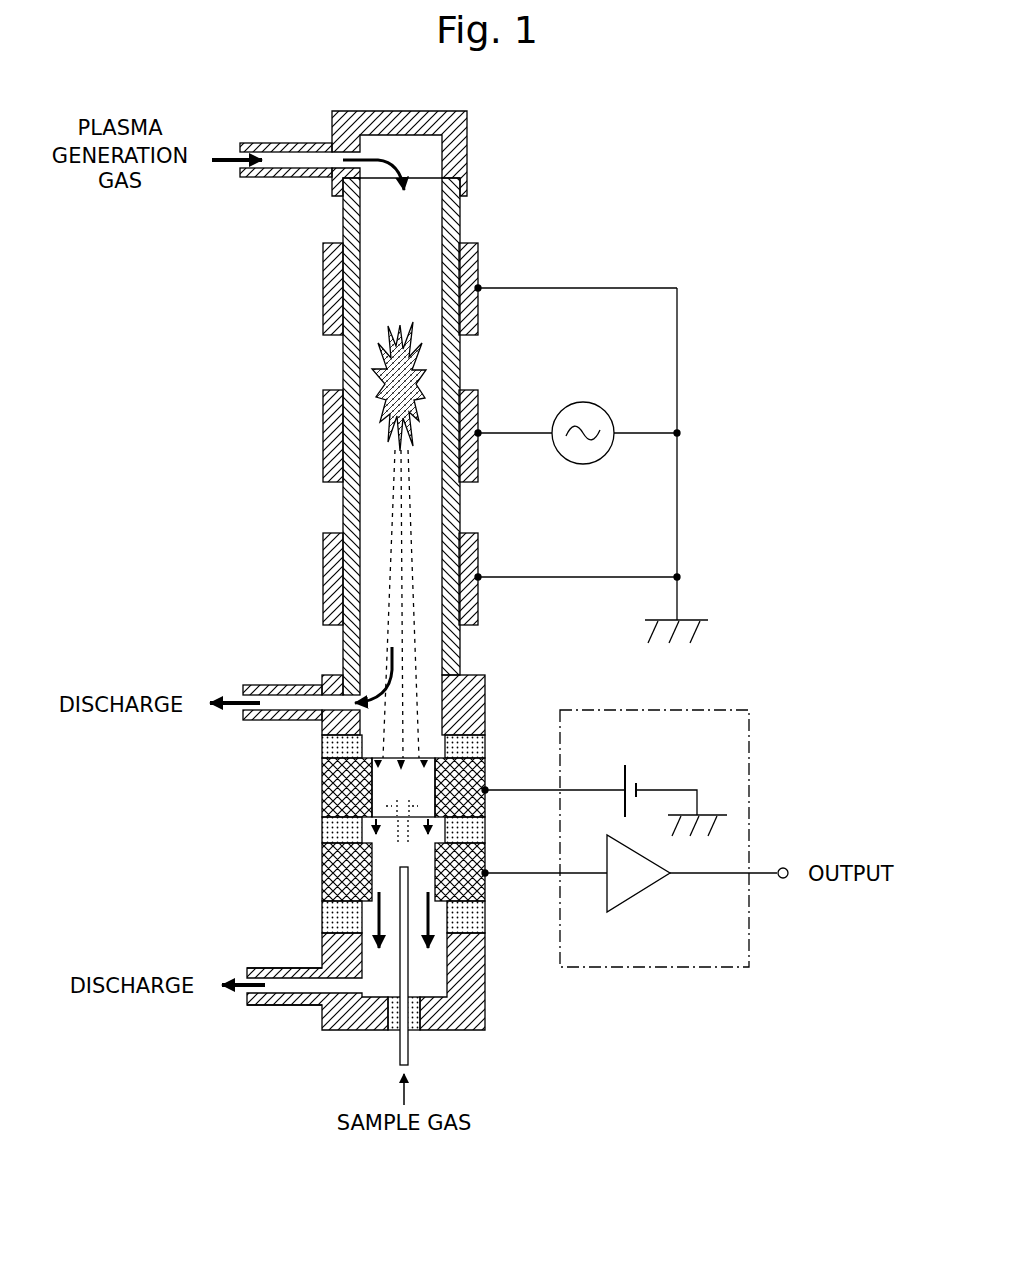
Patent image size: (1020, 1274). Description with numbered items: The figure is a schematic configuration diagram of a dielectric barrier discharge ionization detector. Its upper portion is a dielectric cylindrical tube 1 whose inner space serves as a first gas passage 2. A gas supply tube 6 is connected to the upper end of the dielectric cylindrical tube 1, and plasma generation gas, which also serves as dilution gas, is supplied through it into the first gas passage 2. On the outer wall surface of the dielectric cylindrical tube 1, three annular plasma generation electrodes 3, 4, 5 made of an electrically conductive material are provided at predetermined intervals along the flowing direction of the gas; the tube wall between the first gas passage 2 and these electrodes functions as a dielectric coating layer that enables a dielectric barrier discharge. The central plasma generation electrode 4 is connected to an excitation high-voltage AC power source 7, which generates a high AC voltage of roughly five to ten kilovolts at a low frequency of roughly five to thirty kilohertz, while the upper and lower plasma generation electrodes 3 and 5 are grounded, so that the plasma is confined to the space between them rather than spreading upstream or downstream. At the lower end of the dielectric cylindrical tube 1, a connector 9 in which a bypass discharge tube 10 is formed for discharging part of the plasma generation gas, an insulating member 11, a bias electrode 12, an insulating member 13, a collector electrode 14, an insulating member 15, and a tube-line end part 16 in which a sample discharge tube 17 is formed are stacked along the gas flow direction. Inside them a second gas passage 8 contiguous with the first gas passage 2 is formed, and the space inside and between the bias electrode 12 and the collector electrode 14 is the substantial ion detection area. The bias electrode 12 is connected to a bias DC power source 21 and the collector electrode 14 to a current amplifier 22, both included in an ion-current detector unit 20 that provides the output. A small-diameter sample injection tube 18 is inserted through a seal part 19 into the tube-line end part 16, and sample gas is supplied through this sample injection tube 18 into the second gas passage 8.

The dielectric cylindrical tube 1 is at (460, 230).
The first gas passage 2 is at (383, 525).
The plasma generation electrode 3 is at (322, 273).
The plasma generation electrode 4 is at (322, 420).
The plasma generation electrode 5 is at (322, 566).
The gas supply tube 6 is at (269, 143).
The excitation high-voltage AC power source 7 is at (604, 404).
The second gas passage 8 is at (393, 795).
The connector 9 is at (487, 691).
The bypass discharge tube 10 is at (269, 685).
The insulating member 11 is at (486, 740).
The bias electrode 12 is at (486, 772).
The insulating member 13 is at (322, 822).
The collector electrode 14 is at (486, 852).
The insulating member 15 is at (322, 913).
The tube-line end part 16 is at (459, 1032).
The sample discharge tube 17 is at (278, 1008).
The sample injection tube 18 is at (409, 980).
The seal part 19 is at (388, 1030).
The ion-current detector unit 20 is at (751, 768).
The bias DC power source 21 is at (641, 788).
The current amplifier 22 is at (637, 895).